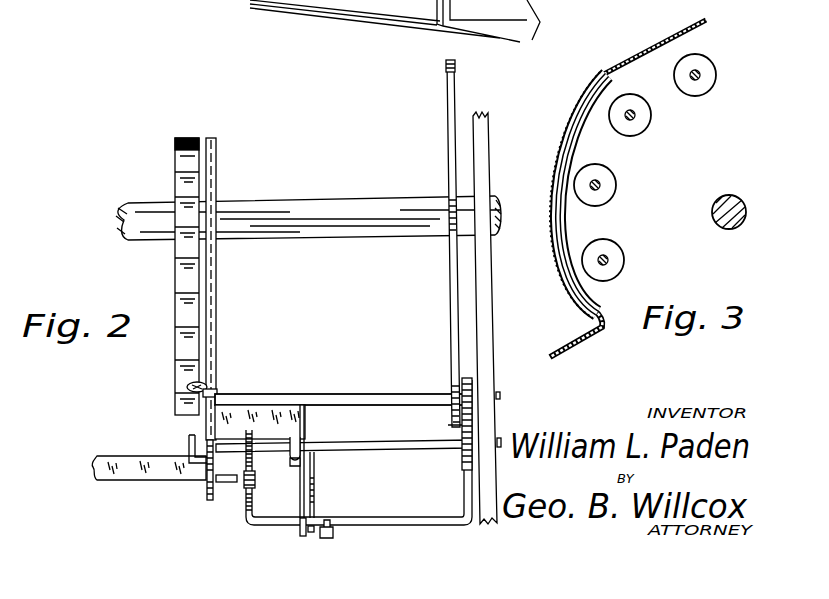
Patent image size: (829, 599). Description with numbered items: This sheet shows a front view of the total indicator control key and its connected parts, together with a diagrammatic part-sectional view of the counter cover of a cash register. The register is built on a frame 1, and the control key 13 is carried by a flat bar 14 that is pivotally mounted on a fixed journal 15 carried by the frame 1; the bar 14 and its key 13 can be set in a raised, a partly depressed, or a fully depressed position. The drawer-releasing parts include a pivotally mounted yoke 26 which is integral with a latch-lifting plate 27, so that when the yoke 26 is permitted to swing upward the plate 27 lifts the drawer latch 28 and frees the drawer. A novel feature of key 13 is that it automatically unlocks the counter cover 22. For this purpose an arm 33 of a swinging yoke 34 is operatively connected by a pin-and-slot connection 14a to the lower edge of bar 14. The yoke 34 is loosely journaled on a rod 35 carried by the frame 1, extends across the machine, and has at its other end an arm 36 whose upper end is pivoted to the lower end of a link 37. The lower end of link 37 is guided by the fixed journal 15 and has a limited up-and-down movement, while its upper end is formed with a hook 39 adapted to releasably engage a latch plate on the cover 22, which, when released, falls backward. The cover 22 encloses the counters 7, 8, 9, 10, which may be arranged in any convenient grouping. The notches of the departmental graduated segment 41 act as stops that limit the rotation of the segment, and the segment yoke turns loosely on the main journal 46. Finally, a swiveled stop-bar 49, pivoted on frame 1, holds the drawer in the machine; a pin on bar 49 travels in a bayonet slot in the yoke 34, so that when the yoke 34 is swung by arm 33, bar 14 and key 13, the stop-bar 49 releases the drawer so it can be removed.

In FIG. 2, the frame 1 is at (478, 161).
In FIG. 3, the counter 7 is at (696, 97).
In FIG. 3, the counter 8 is at (641, 127).
In FIG. 3, the counter 9 is at (612, 191).
In FIG. 3, the counter 10 is at (624, 262).
In FIG. 2, the control key 13 is at (185, 392).
In FIG. 2, the flat bar 14 is at (205, 482).
In FIG. 2, the pin-and-slot connection 14a is at (214, 492).
In FIG. 2, the fixed journal 15 is at (351, 394).
In FIG. 3, the counter cover 22 is at (561, 150).
In FIG. 2, the yoke 26 is at (286, 414).
In FIG. 2, the latch-lifting plate 27 is at (314, 484).
In FIG. 2, the drawer latch 28 is at (300, 530).
In FIG. 2, the arm 33 is at (254, 490).
In FIG. 2, the swinging yoke 34 is at (378, 520).
In FIG. 2, the rod 35 is at (370, 442).
In FIG. 2, the arm 36 is at (472, 412).
In FIG. 2, the link 37 is at (456, 101).
In FIG. 2, the hook 39 is at (457, 69).
In FIG. 2, the graduated segment 41 is at (184, 148).
In FIG. 2, the main journal 46 is at (301, 214).
In FIG. 3, the main journal 46 is at (735, 200).
In FIG. 2, the swiveled stop-bar 49 is at (335, 536).